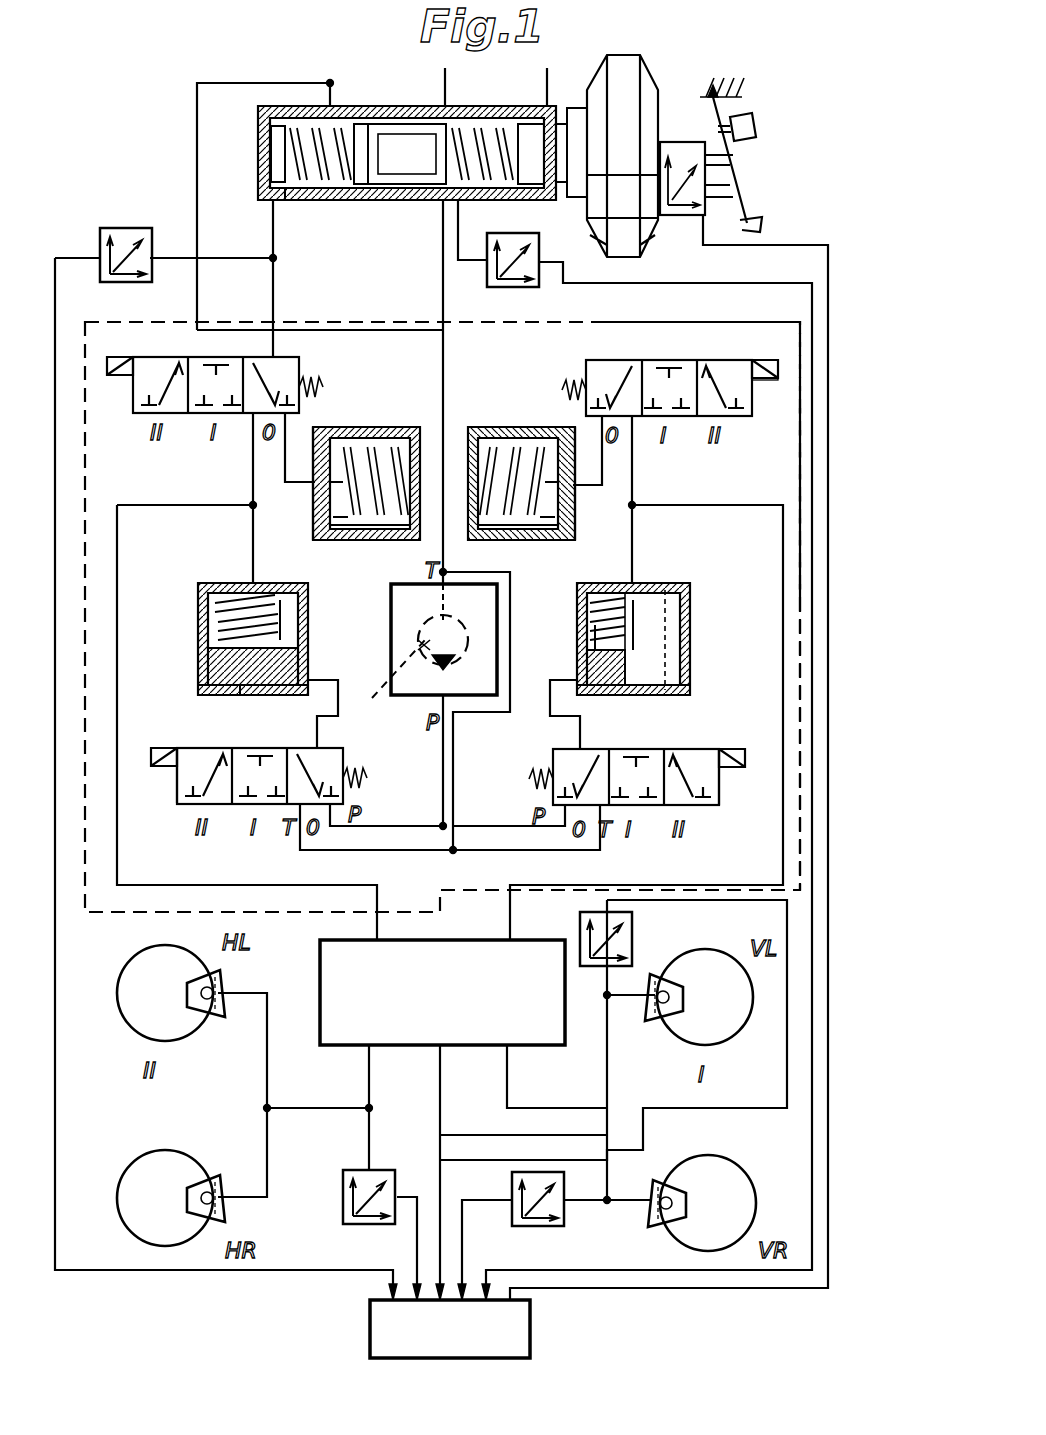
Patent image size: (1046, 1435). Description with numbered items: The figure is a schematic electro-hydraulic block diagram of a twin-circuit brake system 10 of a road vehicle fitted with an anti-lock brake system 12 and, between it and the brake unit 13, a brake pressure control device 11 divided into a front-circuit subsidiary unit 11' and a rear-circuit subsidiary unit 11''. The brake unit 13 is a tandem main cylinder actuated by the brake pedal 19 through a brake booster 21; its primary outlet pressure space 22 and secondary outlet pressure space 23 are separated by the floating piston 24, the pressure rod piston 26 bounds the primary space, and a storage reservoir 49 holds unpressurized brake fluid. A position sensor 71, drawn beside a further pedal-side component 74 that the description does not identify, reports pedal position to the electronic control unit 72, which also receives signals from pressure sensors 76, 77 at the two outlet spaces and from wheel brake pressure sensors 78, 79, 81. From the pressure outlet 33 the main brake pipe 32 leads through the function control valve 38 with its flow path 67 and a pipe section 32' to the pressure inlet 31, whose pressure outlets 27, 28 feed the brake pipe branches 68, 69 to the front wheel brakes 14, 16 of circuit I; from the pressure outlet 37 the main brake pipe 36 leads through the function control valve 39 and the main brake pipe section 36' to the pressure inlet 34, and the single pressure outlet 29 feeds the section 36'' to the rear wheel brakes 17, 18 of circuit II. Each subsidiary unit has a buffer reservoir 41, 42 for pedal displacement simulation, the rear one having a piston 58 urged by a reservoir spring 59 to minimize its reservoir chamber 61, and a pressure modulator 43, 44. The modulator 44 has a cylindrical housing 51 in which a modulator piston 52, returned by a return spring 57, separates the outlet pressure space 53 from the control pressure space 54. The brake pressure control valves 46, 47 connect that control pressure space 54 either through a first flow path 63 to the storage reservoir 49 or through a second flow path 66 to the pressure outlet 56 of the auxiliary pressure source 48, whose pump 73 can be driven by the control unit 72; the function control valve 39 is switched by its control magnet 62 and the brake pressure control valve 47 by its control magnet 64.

The hydraulic twin-circuit brake system 10 is at (186, 138).
The brake pressure control device 11 is at (835, 645).
The subsidiary unit 11' is at (700, 449).
The subsidiary unit 11'' is at (242, 297).
The anti-lock brake system 12 is at (455, 940).
The brake unit 13 is at (272, 104).
The left-hand front wheel brake 14 is at (731, 1010).
The right-hand front wheel brake 16 is at (728, 1216).
The rear wheel brake 17 is at (160, 1006).
The rear wheel brake 18 is at (160, 1211).
The brake pedal 19 is at (755, 212).
The brake booster 21 is at (662, 66).
The primary outlet pressure space 22 is at (440, 200).
The secondary outlet pressure space 23 is at (285, 150).
The floating piston 24 is at (372, 118).
The pressure rod piston 26 is at (530, 118).
The pressure outlet 27 is at (445, 1045).
The pressure outlet 28 is at (505, 1045).
The pressure outlet 29 is at (369, 1045).
The brake pressure inlet 31 is at (512, 948).
The main brake pipe 32 is at (591, 777).
The branch line of first circuit 32' is at (646, 678).
The pressure outlet 33 is at (458, 215).
The pressure inlet 34 is at (377, 945).
The main brake pipe 36 is at (301, 278).
The main brake pipe section 36' is at (247, 676).
The main brake pipe section 36'' is at (317, 1077).
The pressure outlet 37 is at (290, 200).
The function control valve 38 is at (756, 405).
The function control valve 39 is at (138, 380).
The buffer reservoir 41 is at (526, 412).
The buffer reservoir 42 is at (374, 414).
The pressure modulator 43 is at (672, 650).
The pressure modulator 44 is at (198, 618).
The brake pressure control valve 46 is at (718, 805).
The brake pressure control valve 47 is at (180, 790).
The auxiliary pressure source 48 is at (392, 598).
The storage reservoir 49 is at (330, 80).
The cylindrical housing 51 is at (222, 598).
The modulator piston 52 is at (208, 664).
The outlet pressure space 53 is at (298, 612).
The control pressure space 54 is at (205, 688).
The pressure outlet 56 is at (430, 718).
The return spring 57 is at (235, 695).
The piston 58 is at (345, 542).
The reservoir spring 59 is at (408, 430).
The reservoir chamber 61 is at (328, 492).
The control magnet 62 is at (122, 378).
The first flow path 63 is at (305, 760).
The control magnet 64 is at (162, 770).
The second flow path 66 is at (236, 760).
The flow path 67 is at (268, 390).
The brake pipe branch 68 is at (535, 1108).
The brake pipe branch 69 is at (482, 1135).
The position sensor 71 is at (685, 218).
The electronic processing and control unit 72 is at (458, 1351).
The pump 73 is at (388, 684).
The pedal switch 74 is at (750, 118).
The pressure sensor 76 is at (513, 242).
The pressure sensor 77 is at (118, 230).
The pressure sensor 78 is at (636, 940).
The pressure sensor 79 is at (562, 1208).
The pressure sensor 81 is at (345, 1185).